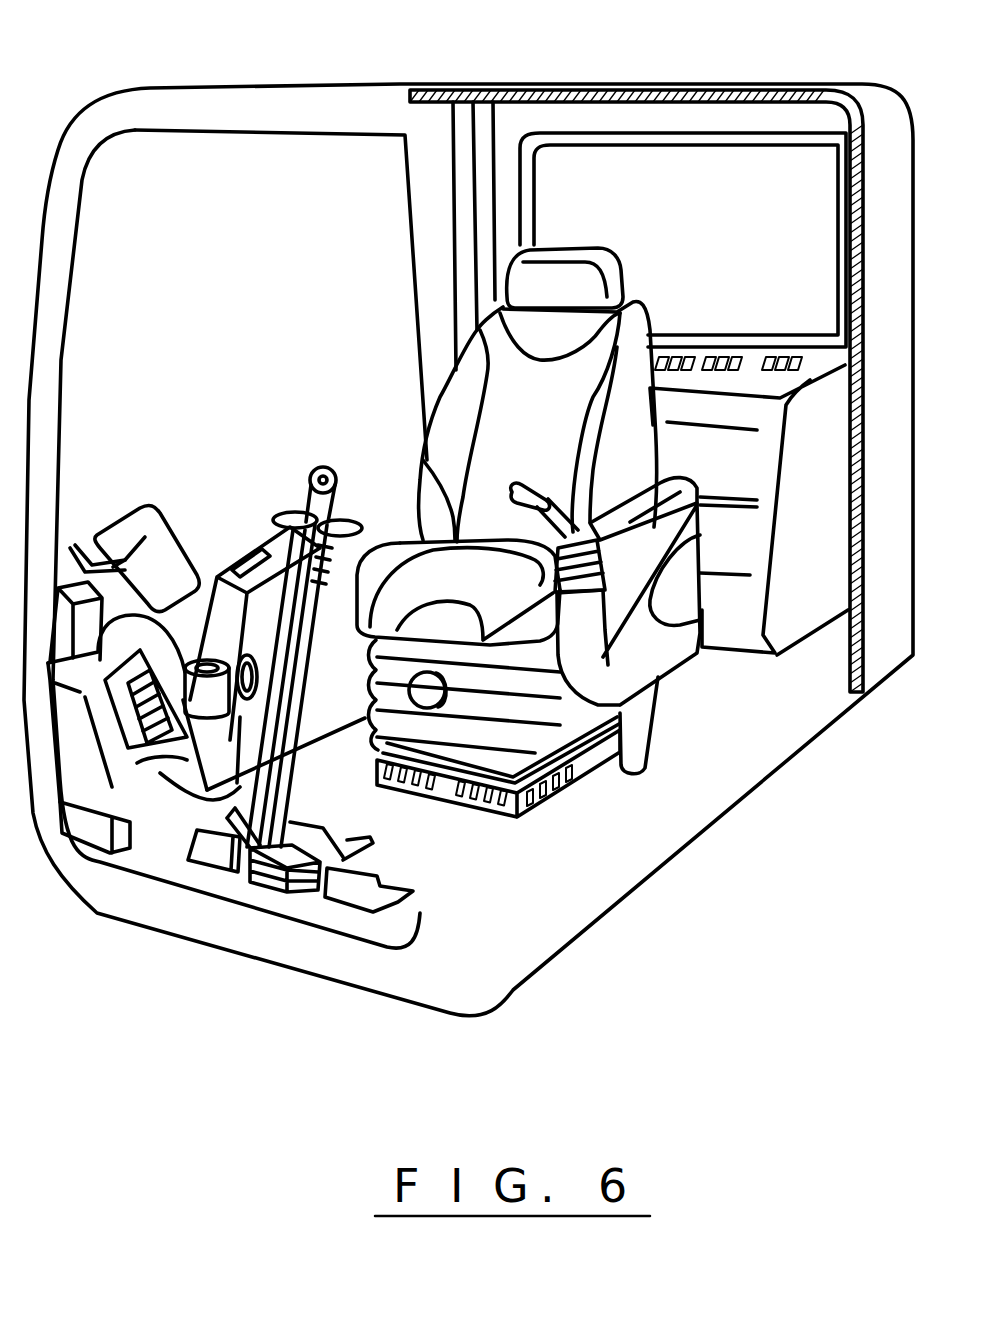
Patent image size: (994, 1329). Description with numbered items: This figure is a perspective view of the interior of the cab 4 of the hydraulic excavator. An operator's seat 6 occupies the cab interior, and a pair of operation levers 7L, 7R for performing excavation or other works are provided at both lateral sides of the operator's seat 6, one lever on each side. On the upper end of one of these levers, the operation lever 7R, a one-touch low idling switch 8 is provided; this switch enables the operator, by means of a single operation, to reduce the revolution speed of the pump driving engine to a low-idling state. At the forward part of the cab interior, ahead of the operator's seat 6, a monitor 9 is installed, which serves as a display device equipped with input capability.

The cab 4 is at (579, 77).
The operator's seat 6 is at (425, 460).
The operation lever 7L is at (527, 493).
The operation lever 7R is at (310, 495).
The one-touch low idling switch 8 is at (322, 473).
The monitor 9 is at (163, 510).